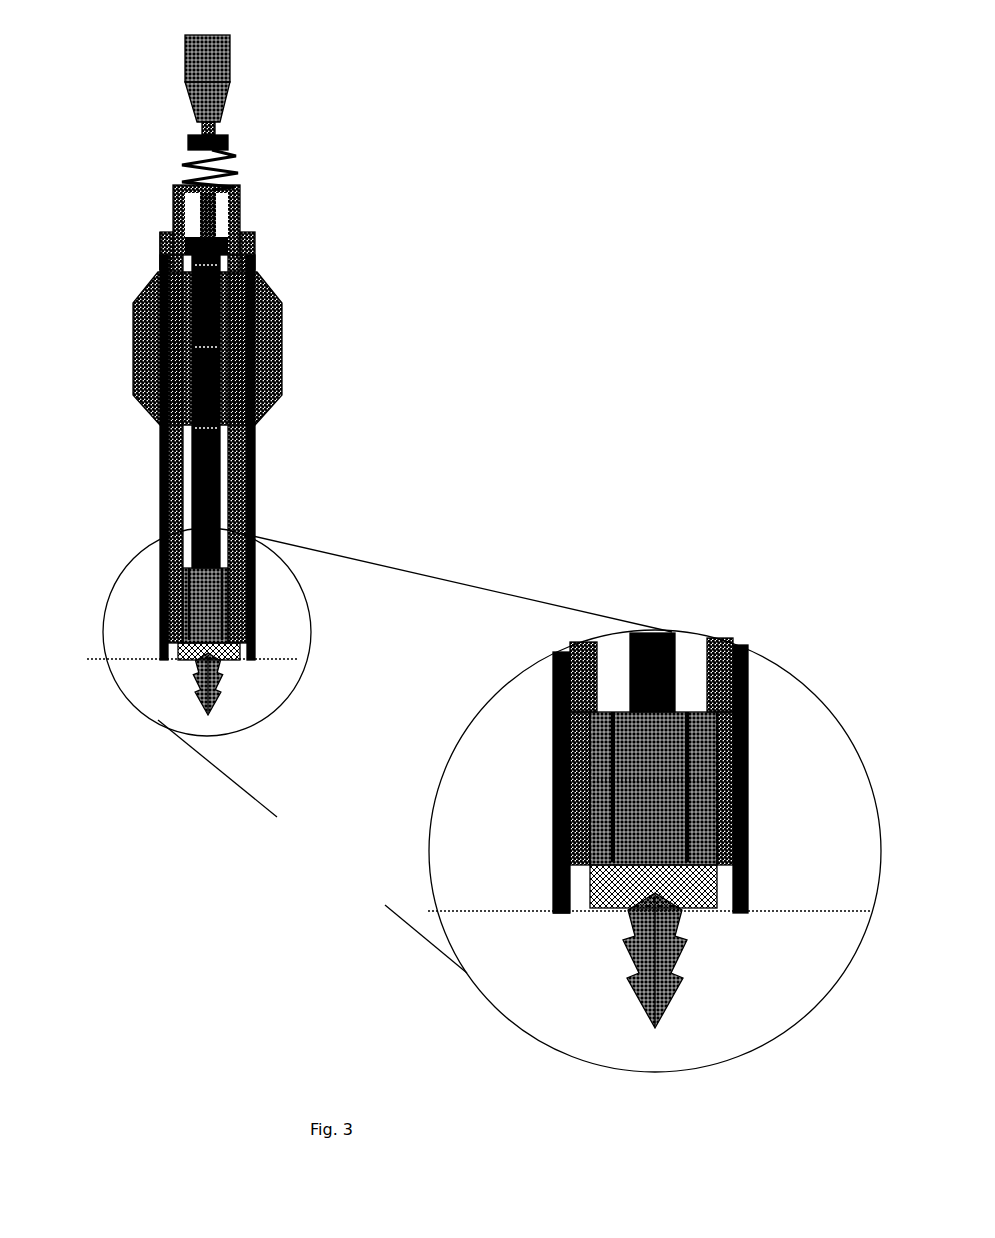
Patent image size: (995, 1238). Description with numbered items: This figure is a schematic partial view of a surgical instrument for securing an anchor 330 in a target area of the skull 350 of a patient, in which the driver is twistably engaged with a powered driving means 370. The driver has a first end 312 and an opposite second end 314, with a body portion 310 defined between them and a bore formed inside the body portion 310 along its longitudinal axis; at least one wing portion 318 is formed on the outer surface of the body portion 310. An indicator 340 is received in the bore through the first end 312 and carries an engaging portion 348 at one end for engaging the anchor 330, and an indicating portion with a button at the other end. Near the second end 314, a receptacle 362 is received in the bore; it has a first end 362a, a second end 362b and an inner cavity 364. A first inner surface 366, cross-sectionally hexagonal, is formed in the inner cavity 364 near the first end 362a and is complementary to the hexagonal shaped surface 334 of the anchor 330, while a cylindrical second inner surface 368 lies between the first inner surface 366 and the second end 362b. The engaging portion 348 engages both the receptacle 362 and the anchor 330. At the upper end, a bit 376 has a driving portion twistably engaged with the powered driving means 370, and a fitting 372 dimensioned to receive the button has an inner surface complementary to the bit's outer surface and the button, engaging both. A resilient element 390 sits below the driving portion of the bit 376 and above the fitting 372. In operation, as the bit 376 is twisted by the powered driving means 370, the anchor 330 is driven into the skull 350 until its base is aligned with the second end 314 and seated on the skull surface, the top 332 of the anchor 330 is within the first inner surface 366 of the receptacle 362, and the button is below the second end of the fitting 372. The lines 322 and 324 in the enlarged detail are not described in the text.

The powered driving means 370 is at (214, 67).
The bit 376 is at (236, 141).
The resilient element 390 is at (186, 160).
The fitting 372 is at (178, 196).
The first end 312 is at (163, 226).
The indicator 340 is at (254, 247).
The wing portion 318 is at (135, 350).
The body portion 310 is at (160, 445).
The receptacle 362 is at (180, 585).
The anchor 330 is at (170, 688).
The engaging portion 348 is at (553, 695).
The inner tube 322 is at (583, 763).
The electrode lead 324 is at (585, 828).
The first inner surface 366 is at (572, 793).
The second inner surface 368 is at (585, 831).
The inner cavity 364 is at (676, 745).
The first end 362a is at (688, 712).
The top 332 is at (703, 775).
The shaped surface 334 is at (718, 890).
The second end 362b is at (701, 914).
The second end 314 is at (560, 914).
The skull 350 is at (802, 913).